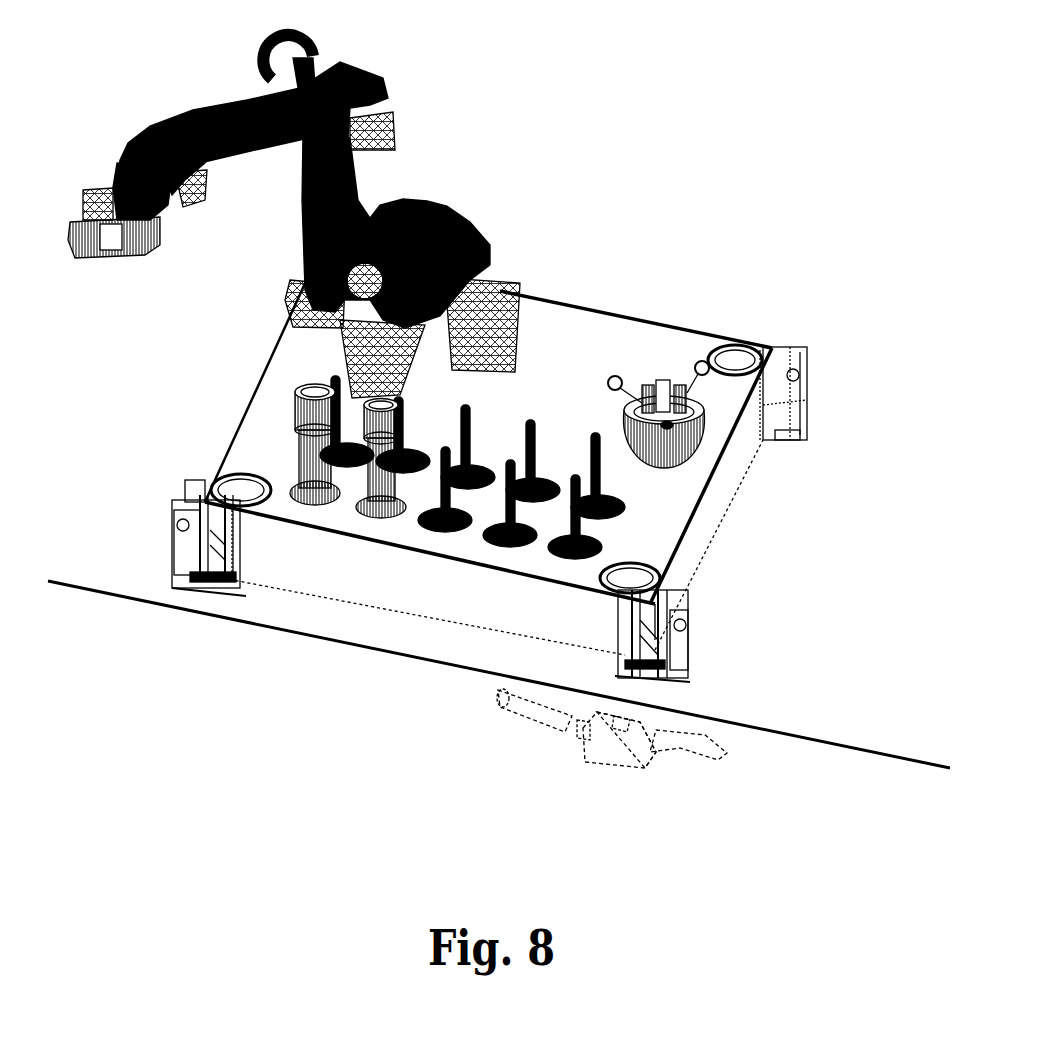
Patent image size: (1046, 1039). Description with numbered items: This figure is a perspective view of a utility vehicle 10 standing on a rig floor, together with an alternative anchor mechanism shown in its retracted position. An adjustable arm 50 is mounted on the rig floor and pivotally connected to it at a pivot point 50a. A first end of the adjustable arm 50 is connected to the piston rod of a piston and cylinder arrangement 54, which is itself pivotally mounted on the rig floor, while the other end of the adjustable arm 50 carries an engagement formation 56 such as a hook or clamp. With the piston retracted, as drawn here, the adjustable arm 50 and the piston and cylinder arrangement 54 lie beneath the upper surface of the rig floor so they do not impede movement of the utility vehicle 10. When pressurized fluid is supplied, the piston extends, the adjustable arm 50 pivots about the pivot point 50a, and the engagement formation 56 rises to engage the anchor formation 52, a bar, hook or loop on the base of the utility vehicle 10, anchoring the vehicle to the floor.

The utility vehicle 10 is at (450, 358).
The adjustable arm 50 is at (615, 752).
The pivot point 50a is at (620, 715).
The anchor formation 52 is at (692, 617).
The piston and cylinder arrangement 54 is at (527, 713).
The engagement formation 56 is at (680, 710).